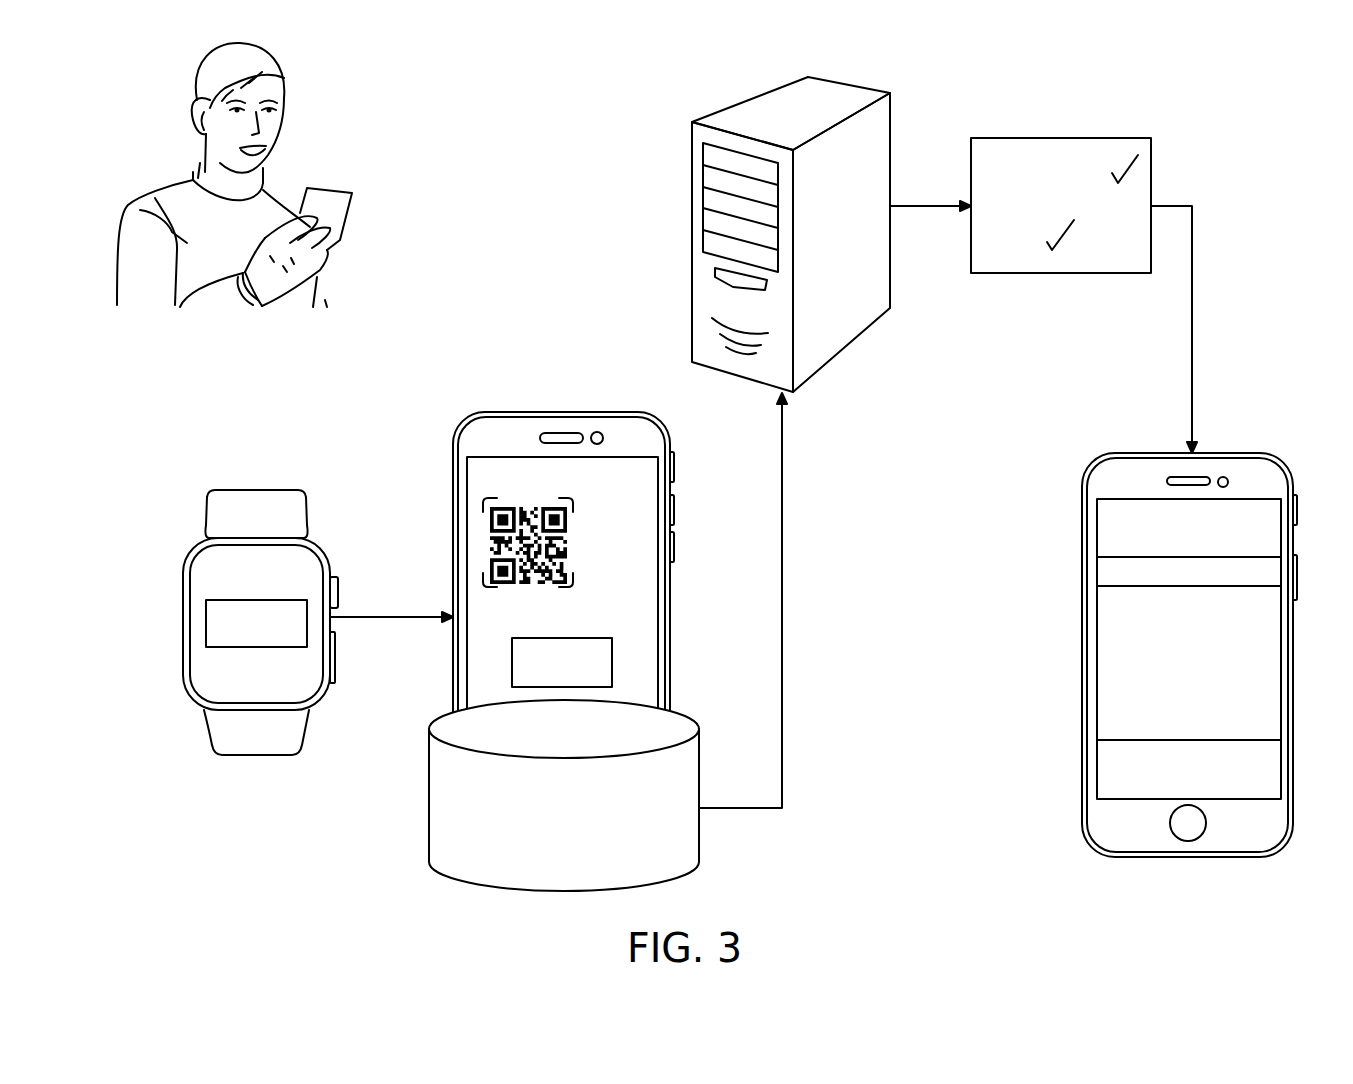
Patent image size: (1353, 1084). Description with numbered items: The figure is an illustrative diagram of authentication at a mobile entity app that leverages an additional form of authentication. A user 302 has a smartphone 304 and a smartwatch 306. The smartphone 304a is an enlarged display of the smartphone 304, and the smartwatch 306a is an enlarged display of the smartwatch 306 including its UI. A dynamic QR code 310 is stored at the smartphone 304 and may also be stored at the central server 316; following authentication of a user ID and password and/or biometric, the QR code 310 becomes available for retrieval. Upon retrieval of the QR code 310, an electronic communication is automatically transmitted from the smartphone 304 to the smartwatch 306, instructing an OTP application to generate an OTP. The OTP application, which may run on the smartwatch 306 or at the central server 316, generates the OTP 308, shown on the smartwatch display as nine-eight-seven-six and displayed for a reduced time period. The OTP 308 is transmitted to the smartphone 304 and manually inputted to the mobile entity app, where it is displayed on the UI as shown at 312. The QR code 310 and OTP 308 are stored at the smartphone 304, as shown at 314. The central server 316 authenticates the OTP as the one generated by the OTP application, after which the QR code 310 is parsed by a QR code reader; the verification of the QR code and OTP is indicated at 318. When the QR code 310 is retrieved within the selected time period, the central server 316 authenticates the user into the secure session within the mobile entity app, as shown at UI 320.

The user 302 is at (200, 160).
The smartphone 304 is at (327, 187).
The smartwatch 306 is at (243, 303).
The enlarged display of smartphone 304a is at (535, 568).
The enlarged display of smartwatch 306a is at (219, 622).
The OTP 308 is at (243, 599).
The QR code 310 is at (483, 548).
The OTP displayed on the smartphone UI 312 is at (550, 638).
The storage of QR code and OTP 314 is at (428, 825).
The central server 316 is at (784, 86).
The verification result 318 is at (1052, 136).
The UI 320 is at (1082, 643).